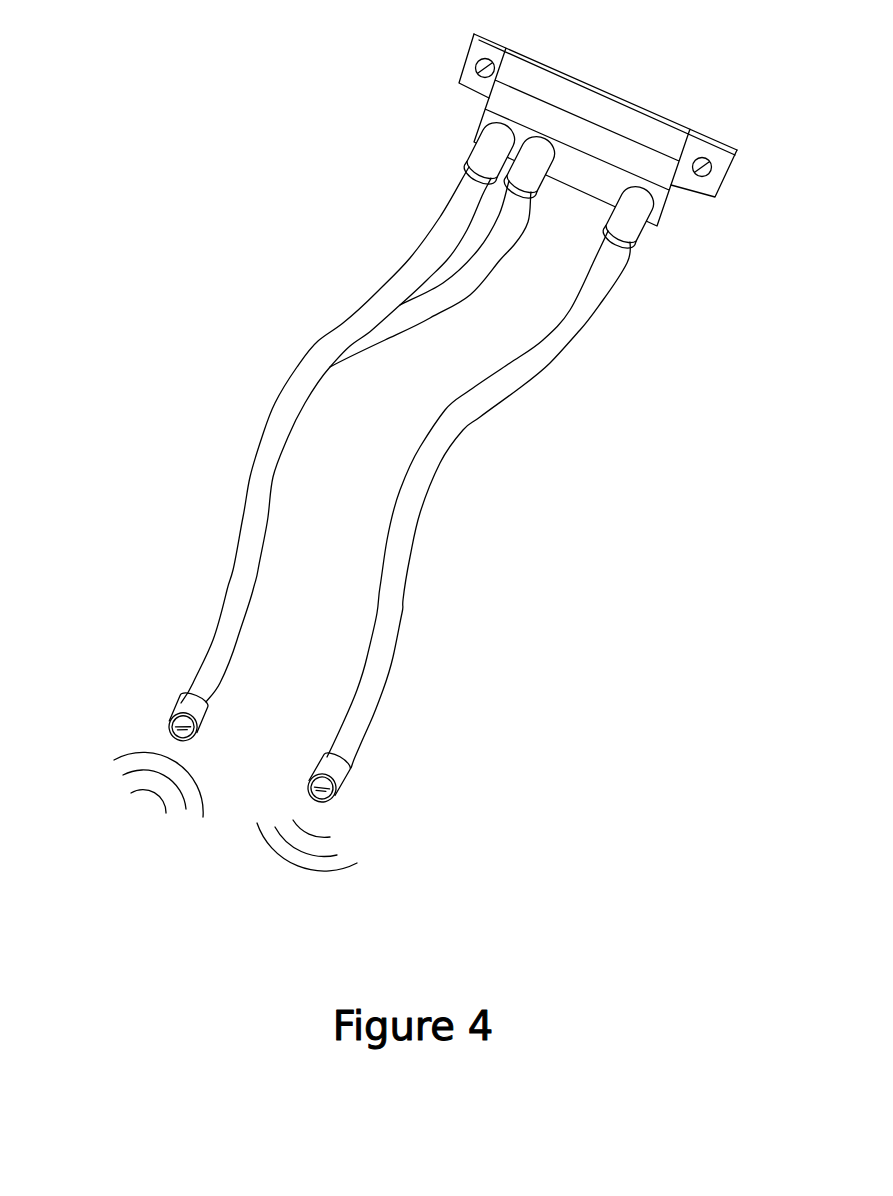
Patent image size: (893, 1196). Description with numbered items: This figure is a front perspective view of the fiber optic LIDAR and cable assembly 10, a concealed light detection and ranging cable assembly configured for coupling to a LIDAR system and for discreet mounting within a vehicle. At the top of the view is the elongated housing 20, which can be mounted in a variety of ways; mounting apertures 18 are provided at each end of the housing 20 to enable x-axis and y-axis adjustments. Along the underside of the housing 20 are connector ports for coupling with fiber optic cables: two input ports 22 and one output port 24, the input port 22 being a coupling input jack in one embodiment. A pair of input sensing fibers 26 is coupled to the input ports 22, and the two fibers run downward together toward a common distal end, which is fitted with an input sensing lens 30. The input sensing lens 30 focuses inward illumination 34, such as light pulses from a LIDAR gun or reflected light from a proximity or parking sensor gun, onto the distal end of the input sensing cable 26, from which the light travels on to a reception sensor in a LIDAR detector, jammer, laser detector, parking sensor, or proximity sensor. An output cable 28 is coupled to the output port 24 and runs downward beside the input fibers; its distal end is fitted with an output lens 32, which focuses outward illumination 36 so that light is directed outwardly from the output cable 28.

The fiber optic LIDAR and cable assembly 10 is at (249, 109).
The mounting apertures 18 is at (477, 64).
The housing 20 is at (625, 125).
The input port 22 is at (490, 135).
The output port 24 is at (647, 205).
The input sensing fibers 26 is at (328, 348).
The output cable 28 is at (568, 325).
The input sensing lens 30 is at (168, 730).
The output lens 32 is at (325, 797).
The inward illumination 34 is at (142, 808).
The outward illumination 36 is at (284, 817).